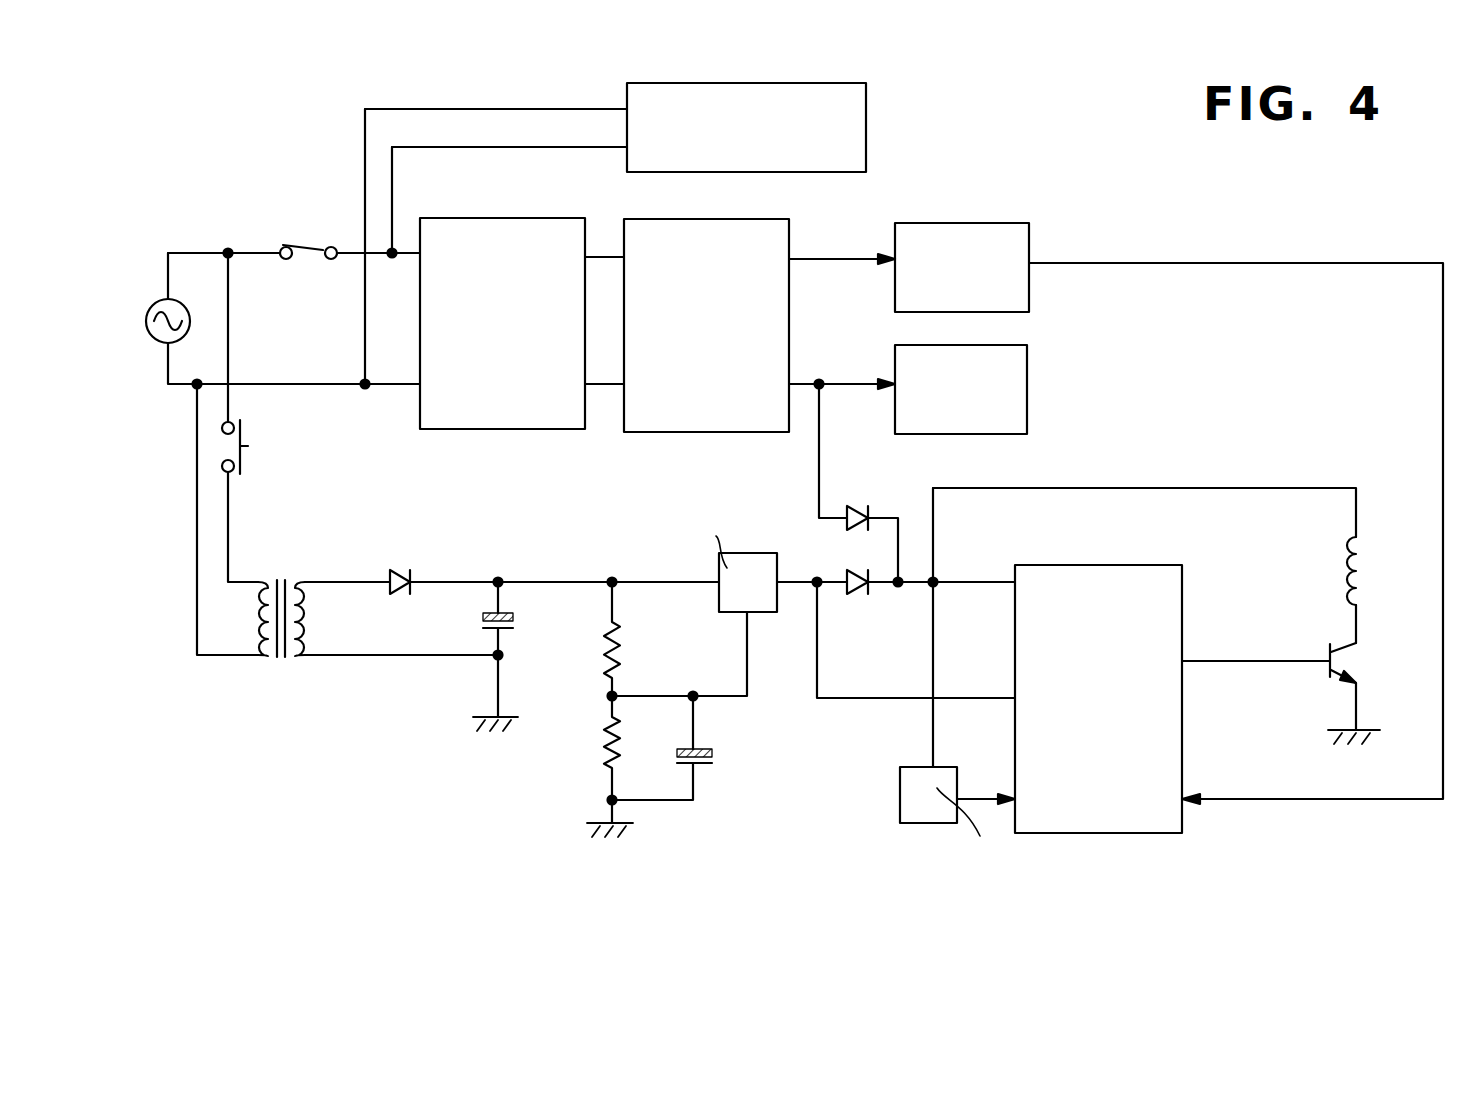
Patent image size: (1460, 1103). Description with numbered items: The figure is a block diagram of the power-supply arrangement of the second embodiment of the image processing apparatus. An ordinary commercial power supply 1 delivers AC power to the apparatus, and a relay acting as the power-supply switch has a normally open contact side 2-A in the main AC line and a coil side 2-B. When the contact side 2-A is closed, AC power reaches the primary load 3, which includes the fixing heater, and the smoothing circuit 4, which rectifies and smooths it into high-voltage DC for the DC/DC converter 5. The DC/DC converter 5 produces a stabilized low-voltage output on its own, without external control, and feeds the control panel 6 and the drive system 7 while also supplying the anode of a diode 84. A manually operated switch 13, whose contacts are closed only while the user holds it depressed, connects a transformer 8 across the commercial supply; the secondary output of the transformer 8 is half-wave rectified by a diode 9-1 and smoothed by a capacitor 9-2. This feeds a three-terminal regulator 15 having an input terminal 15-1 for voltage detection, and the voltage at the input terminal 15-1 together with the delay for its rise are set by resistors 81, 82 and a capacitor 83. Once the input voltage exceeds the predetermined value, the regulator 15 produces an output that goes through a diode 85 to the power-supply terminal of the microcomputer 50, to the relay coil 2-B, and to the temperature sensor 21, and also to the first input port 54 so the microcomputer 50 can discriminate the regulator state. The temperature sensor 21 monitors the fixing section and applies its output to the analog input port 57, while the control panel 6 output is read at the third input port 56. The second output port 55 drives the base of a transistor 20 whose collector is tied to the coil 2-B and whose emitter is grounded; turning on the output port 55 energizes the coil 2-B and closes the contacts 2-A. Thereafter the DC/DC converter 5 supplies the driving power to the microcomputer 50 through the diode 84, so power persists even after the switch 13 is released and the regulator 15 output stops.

The commercial power supply 1 is at (151, 296).
The contact side of relay 2-A is at (303, 260).
The primary load 3 is at (867, 125).
The smoothing circuit 4 is at (536, 218).
The DC/DC converter 5 is at (790, 240).
The control panel 6 is at (1030, 243).
The drive system 7 is at (1029, 378).
The manually operated switch 13 is at (252, 456).
The transformer 8 is at (275, 668).
The diode 9-1 is at (418, 562).
The capacitor 9-2 is at (472, 620).
The three-terminal regulator 15 is at (746, 553).
The input terminal 15-1 is at (748, 666).
The resistor 81 is at (622, 656).
The resistor 82 is at (603, 733).
The capacitor 83 is at (720, 762).
The diode 84 is at (852, 506).
The diode 85 is at (855, 598).
The temperature sensor 21 is at (898, 800).
The microcomputer 50 is at (1130, 565).
The input port IP1 54 is at (1012, 697).
The output port OP2 55 is at (1184, 658).
The input port IP3 56 is at (1184, 796).
The analog input port IP4 57 is at (1008, 796).
The transistor 20 is at (1352, 664).
The coil side of relay 2-B is at (1364, 540).